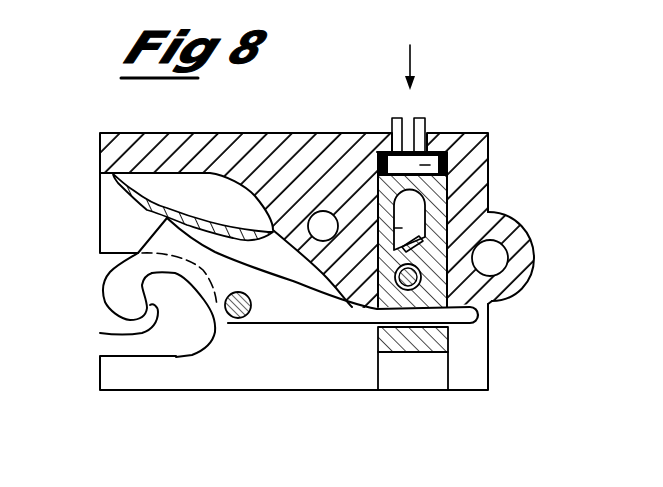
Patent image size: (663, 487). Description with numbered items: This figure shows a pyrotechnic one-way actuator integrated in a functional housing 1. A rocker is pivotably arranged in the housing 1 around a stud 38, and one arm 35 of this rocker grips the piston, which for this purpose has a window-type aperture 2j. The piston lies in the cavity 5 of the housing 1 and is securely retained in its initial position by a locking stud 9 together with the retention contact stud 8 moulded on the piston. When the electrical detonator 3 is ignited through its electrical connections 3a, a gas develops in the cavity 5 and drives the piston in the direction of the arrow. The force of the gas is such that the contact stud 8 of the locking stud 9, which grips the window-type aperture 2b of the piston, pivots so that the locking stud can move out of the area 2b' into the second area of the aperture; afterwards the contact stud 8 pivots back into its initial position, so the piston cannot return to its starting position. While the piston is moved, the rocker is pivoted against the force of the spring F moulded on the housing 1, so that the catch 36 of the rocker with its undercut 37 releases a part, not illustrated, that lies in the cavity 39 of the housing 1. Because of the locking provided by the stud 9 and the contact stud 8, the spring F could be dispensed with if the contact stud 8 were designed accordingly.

The housing 1 is at (226, 134).
The window-type aperture 2b is at (386, 201).
The area 2b' is at (488, 270).
The electrical detonator 3 is at (451, 152).
The electrical connections 3a is at (420, 118).
The cavity 5 is at (405, 373).
The contact stud 8 is at (488, 205).
The locking stud 9 is at (500, 297).
The window-type aperture 2j is at (450, 328).
The arm 35 is at (320, 323).
The catch 36 is at (110, 283).
The undercut 37 is at (112, 326).
The stud 38 is at (232, 318).
The cavity 39 is at (182, 334).
The spring F is at (118, 194).